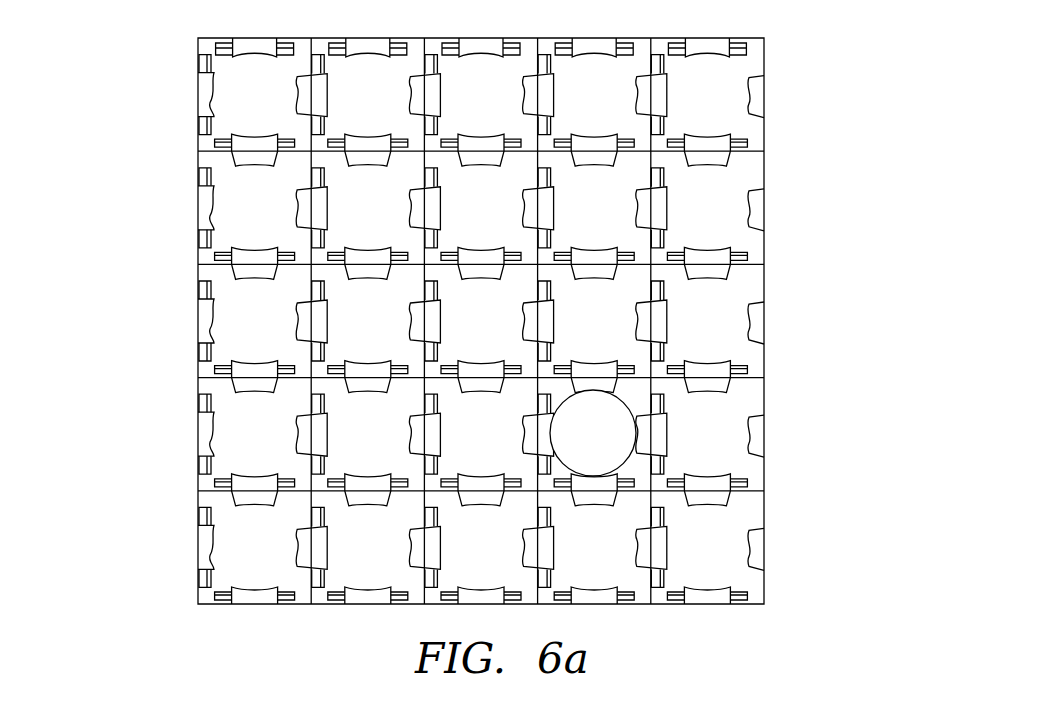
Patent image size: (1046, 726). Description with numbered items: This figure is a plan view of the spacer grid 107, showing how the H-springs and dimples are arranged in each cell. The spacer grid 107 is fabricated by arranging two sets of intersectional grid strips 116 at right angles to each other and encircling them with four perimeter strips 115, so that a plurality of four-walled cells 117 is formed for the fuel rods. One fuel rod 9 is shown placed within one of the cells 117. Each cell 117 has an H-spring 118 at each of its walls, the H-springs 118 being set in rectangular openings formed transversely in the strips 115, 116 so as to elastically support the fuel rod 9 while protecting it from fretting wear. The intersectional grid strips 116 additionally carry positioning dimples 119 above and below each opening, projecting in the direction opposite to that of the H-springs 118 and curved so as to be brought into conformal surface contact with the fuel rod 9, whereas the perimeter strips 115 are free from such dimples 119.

The spacer grid 107 is at (444, 321).
The perimeter strip 115 is at (766, 325).
The intersectional grid strip 116 is at (653, 486).
The four-walled cell 117 is at (638, 402).
The H-spring 118 is at (757, 441).
The positioning dimple 119 is at (707, 162).
The fuel rod 9 is at (592, 460).